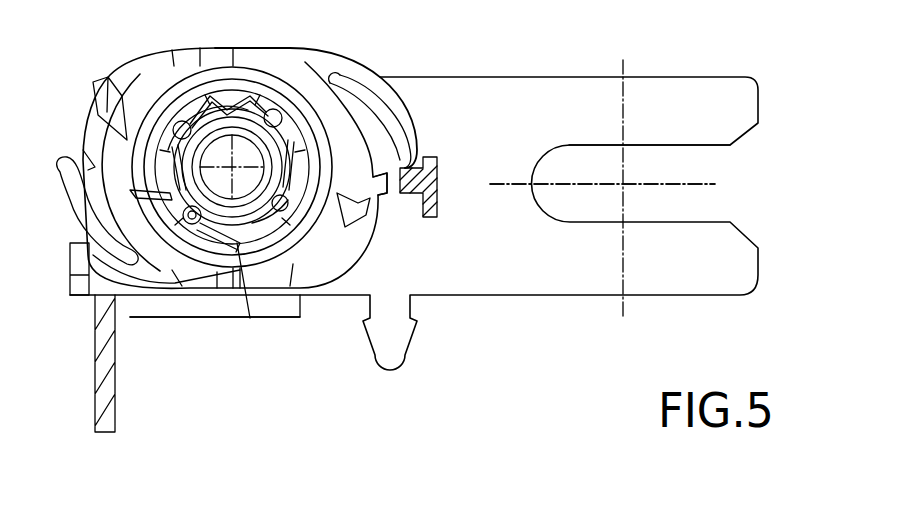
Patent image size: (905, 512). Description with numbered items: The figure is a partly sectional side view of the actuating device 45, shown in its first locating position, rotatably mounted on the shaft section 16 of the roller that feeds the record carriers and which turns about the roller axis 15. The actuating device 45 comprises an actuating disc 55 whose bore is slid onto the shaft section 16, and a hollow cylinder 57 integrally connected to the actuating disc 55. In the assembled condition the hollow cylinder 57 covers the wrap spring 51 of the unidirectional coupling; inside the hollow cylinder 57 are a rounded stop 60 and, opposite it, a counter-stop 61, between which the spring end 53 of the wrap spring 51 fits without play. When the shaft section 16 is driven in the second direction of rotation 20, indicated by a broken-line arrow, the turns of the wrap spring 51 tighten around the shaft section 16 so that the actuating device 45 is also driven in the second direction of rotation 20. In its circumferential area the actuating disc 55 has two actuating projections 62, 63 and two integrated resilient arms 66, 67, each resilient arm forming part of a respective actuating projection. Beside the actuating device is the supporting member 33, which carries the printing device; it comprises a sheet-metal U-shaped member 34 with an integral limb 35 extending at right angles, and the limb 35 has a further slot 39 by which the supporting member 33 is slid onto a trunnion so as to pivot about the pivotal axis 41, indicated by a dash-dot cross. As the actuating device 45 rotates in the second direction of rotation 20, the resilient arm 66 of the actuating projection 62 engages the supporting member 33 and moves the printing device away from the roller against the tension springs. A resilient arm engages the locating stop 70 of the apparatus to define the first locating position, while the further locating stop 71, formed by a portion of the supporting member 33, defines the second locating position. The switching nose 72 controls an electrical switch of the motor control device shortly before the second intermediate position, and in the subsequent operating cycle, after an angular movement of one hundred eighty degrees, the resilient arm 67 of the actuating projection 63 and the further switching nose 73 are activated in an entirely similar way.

The roller axis 15 is at (223, 157).
The shaft section 16 is at (232, 137).
The second direction of rotation 20 is at (253, 157).
The supporting member 33 is at (93, 297).
The U-shaped member 34 is at (128, 312).
The limb 35 is at (526, 92).
The further slot 39 is at (655, 147).
The pivotal axis 41 is at (624, 186).
The actuating device 45 is at (390, 266).
The wrap spring 51 is at (248, 295).
The spring end 53 is at (192, 217).
The actuating disc 55 is at (208, 290).
The hollow cylinder 57 is at (186, 82).
The rounded stop 60 is at (205, 284).
The counter-stop 61 is at (137, 192).
The actuating projection 62 is at (81, 146).
The actuating projection 63 is at (389, 195).
The resilient arm 66 is at (56, 172).
The resilient arm 67 is at (403, 133).
The locating stop 70 is at (437, 168).
The further locating stop 71 is at (305, 300).
The switching nose 72 is at (358, 208).
The further switching nose 73 is at (92, 105).